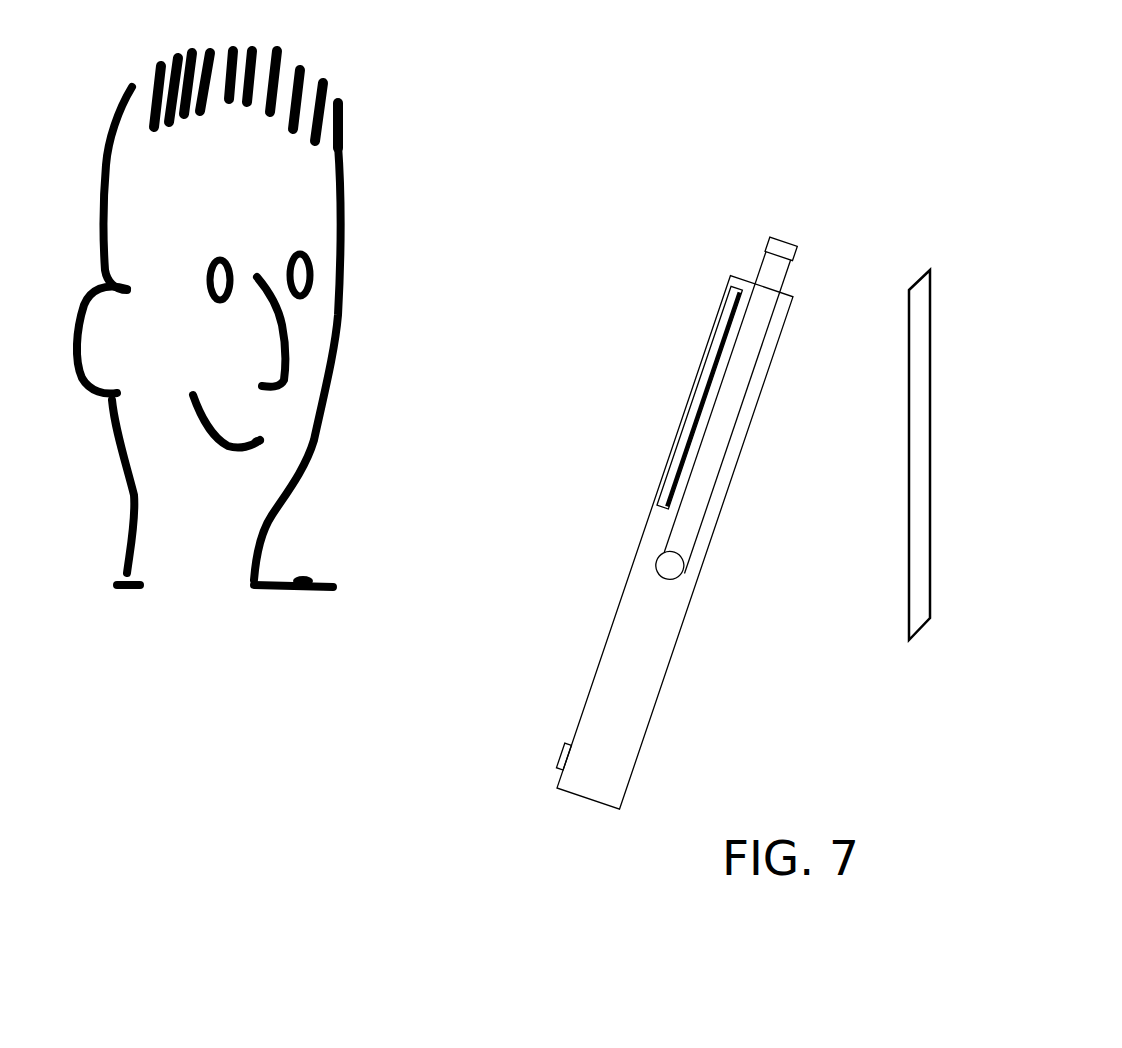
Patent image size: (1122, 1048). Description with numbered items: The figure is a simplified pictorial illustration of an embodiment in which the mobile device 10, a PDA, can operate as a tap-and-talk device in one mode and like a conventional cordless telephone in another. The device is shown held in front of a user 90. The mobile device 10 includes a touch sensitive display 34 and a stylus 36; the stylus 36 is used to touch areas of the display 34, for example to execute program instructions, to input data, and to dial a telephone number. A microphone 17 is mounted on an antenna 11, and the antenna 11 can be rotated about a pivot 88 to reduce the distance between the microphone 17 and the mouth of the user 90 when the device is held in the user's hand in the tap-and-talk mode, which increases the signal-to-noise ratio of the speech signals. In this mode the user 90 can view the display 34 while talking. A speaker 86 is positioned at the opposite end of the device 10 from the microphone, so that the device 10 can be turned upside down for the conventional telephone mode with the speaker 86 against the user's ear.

The user 90 is at (384, 178).
The mobile device 10 is at (707, 720).
The microphone 17 is at (782, 237).
The antenna 11 is at (678, 527).
The pivot 88 is at (684, 573).
The touch sensitive display 34 is at (713, 330).
The speaker 86 is at (562, 752).
The stylus 36 is at (933, 308).